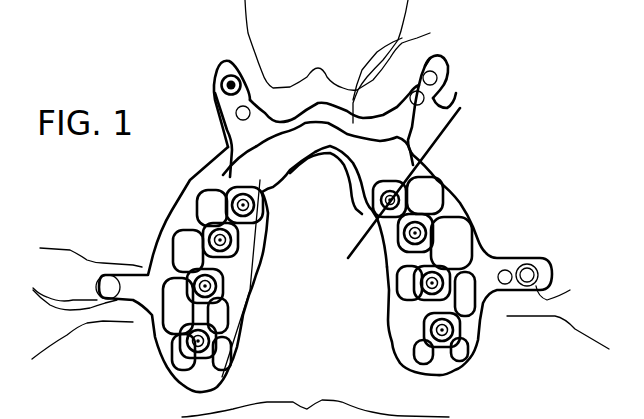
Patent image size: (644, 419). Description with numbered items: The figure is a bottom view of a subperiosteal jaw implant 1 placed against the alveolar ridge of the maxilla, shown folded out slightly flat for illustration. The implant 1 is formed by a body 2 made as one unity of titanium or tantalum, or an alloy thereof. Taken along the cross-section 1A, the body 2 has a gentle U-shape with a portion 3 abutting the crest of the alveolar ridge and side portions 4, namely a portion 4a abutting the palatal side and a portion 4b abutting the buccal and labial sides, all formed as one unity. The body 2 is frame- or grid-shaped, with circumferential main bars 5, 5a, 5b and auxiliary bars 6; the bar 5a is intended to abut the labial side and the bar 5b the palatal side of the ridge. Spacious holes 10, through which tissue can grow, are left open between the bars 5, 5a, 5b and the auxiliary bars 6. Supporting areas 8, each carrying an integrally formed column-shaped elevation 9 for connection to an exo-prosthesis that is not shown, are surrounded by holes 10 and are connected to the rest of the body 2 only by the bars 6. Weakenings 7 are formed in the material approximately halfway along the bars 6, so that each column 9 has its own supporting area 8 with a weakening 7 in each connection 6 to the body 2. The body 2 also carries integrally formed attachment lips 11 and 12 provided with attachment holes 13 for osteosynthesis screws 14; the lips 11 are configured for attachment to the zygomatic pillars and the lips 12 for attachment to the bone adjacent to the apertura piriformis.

The subperiosteal jaw implant 1 is at (490, 147).
The cross-section 1A is at (462, 115).
The body 2 is at (456, 173).
The portion abutting the crest 3 is at (394, 332).
The portions abutting the sides of the alveolar ridge 4 is at (487, 253).
The palatal portion 4a is at (172, 225).
The buccal and labial portion 4b is at (237, 309).
The main bars 5 is at (227, 182).
The labial main bar 5a is at (346, 50).
The palatal main bar 5b is at (300, 170).
The auxiliary bars 6 is at (222, 263).
The weakenings 7 is at (214, 371).
The supporting areas 8 is at (417, 341).
The column-shaped elevations 9 is at (252, 231).
The holes 10 is at (249, 163).
The attachment lips for zygomatic pillars 11 is at (540, 272).
The attachment lips for apertura piriformis 12 is at (440, 60).
The attachment holes 13 is at (306, 193).
The osteosynthesis screws 14 is at (229, 62).